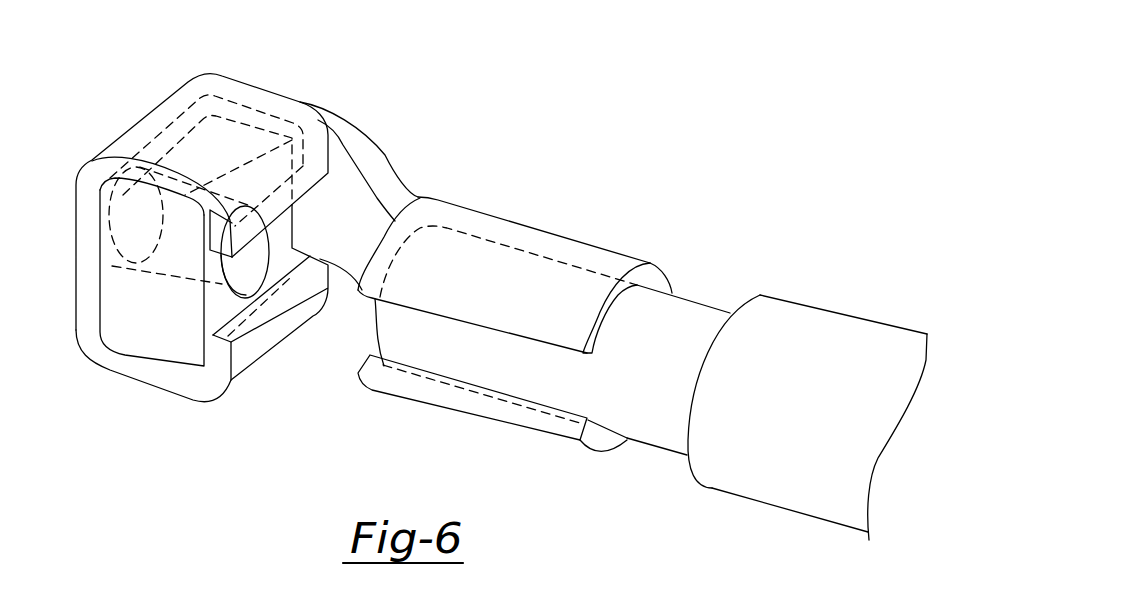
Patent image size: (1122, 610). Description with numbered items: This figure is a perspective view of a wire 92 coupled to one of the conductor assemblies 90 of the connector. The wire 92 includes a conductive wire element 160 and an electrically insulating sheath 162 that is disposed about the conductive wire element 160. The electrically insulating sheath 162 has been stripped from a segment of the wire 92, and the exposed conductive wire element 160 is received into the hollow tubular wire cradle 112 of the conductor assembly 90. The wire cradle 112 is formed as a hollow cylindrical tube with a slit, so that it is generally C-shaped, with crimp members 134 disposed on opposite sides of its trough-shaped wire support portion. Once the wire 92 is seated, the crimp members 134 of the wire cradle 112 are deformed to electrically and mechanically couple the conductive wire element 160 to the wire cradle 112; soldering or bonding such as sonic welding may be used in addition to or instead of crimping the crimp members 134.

The conductor assembly 90 is at (427, 90).
The wire cradle 112 is at (520, 230).
The crimp member 134 is at (485, 290).
The conductive wire element 160 is at (693, 318).
The electrically insulating sheath 162 is at (803, 333).
The wire 92 is at (752, 470).